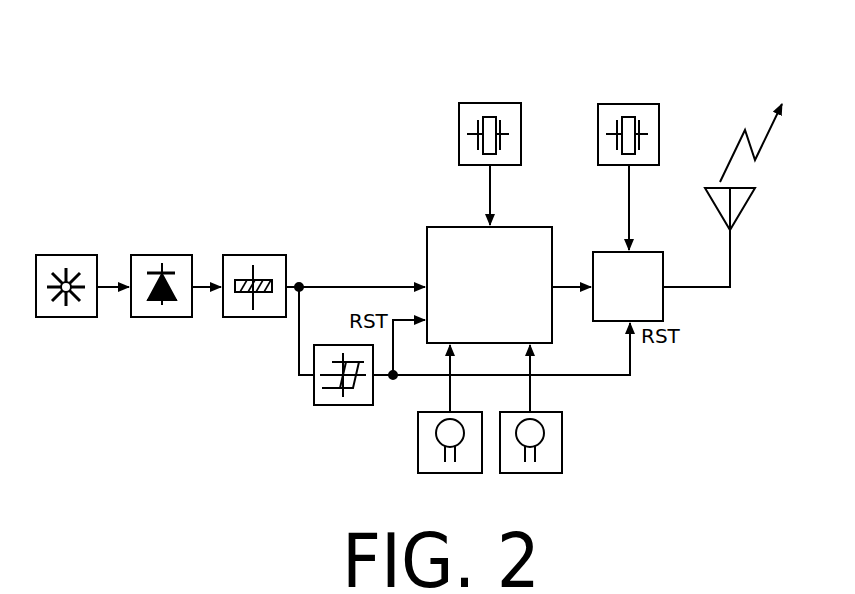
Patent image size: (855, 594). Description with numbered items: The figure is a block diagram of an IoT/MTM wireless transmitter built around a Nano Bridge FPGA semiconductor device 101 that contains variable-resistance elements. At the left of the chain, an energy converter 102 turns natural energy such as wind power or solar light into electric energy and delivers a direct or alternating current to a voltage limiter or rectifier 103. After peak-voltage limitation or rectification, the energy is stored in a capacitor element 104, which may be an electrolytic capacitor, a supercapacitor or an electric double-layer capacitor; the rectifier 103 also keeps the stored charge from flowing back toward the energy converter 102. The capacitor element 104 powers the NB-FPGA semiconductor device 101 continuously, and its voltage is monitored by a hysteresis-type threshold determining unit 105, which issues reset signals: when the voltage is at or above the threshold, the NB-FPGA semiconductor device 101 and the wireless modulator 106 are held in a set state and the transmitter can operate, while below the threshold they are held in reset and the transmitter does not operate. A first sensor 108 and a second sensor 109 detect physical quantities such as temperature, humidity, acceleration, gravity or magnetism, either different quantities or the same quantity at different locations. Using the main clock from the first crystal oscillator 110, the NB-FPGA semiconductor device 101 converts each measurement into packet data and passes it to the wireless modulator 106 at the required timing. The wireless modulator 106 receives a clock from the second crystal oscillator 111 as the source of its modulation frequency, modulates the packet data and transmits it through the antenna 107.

The NB-FPGA semiconductor device 101 is at (540, 227).
The energy converter 102 is at (75, 255).
The voltage limiter or rectifier 103 is at (165, 255).
The capacitor element 104 is at (260, 255).
The hysteresis-type threshold determining unit 105 is at (314, 397).
The wireless modulator 106 is at (650, 252).
The antenna 107 is at (717, 185).
The first sensor 108 is at (418, 445).
The second sensor 109 is at (562, 440).
The first crystal oscillator 110 is at (492, 103).
The second crystal oscillator 111 is at (632, 104).